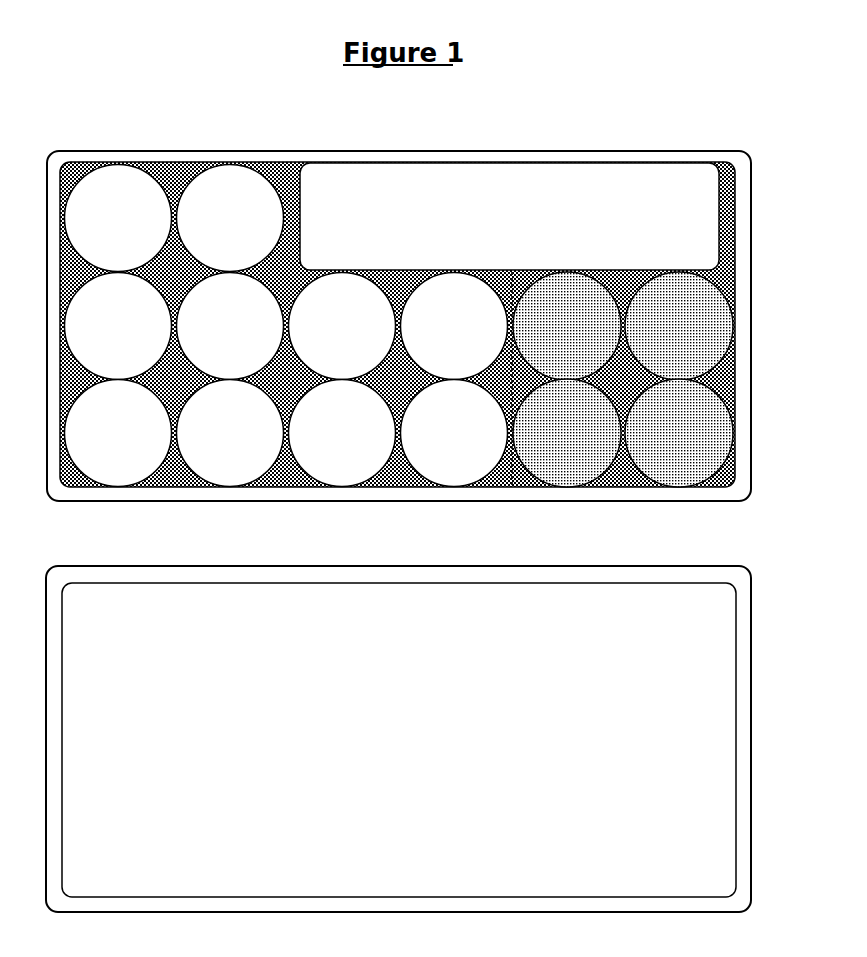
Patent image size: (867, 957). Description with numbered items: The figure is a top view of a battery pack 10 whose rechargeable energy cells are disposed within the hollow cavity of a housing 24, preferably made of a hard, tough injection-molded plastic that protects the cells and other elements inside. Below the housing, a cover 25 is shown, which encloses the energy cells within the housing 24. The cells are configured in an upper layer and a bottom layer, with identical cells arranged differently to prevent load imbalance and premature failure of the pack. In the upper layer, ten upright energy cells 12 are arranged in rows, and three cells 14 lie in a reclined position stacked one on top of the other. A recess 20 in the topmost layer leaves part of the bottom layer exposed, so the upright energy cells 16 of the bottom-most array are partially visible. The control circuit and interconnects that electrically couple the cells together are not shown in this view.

The battery pack 10 is at (399, 277).
The energy cells 12 is at (286, 326).
The cells 14 is at (509, 216).
The energy cells 16 is at (623, 379).
The recess 20 is at (625, 477).
The housing 24 is at (545, 151).
The cover 25 is at (398, 739).